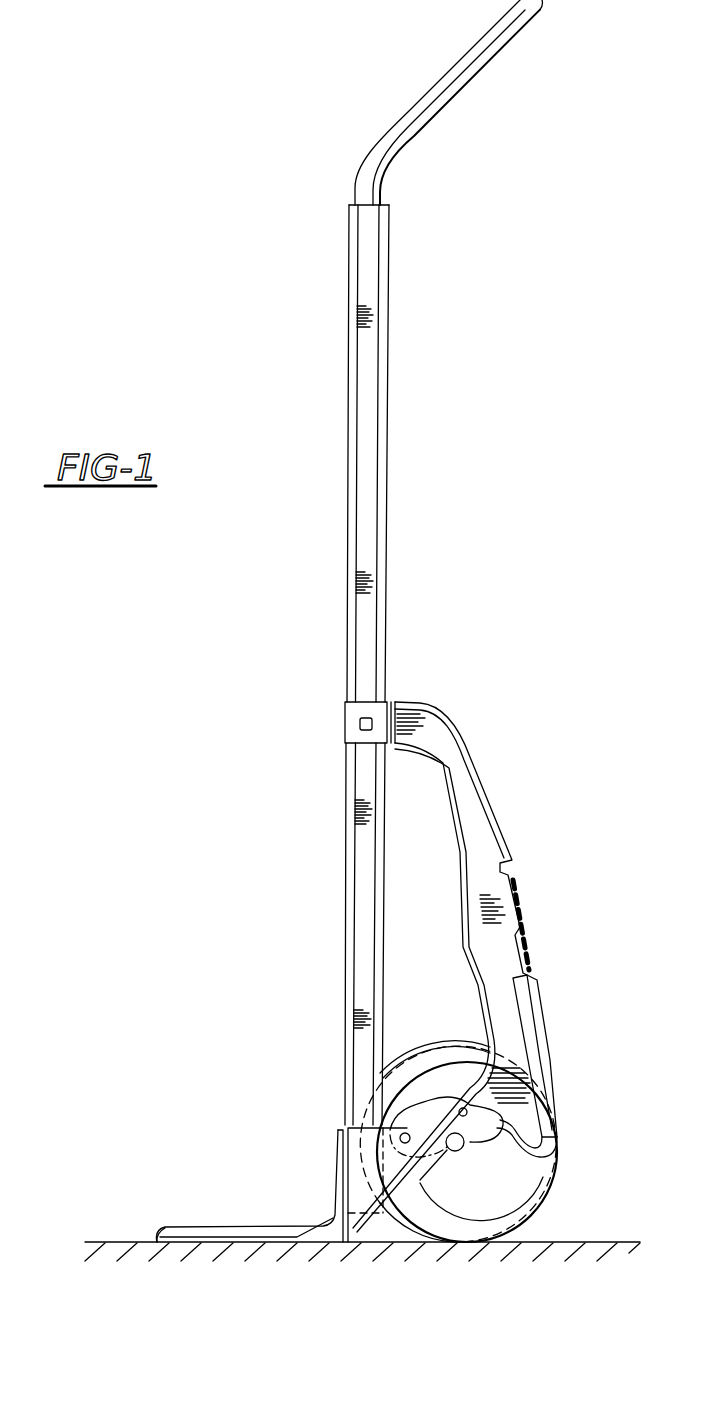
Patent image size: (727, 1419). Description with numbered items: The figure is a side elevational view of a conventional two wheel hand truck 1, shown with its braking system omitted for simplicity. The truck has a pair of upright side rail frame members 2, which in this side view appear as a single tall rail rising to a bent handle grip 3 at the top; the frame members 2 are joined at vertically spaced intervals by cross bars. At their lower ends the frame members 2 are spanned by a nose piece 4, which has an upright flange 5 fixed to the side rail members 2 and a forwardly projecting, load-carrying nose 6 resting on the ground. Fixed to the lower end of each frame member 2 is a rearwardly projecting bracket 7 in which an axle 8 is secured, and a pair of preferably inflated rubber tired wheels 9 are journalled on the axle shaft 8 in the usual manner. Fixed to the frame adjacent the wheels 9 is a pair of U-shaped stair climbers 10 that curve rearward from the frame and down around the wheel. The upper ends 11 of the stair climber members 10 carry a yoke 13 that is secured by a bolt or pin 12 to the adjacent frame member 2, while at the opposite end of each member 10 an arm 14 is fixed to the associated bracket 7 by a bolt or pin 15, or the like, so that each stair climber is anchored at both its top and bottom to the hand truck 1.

The two wheel hand truck 1 is at (326, 569).
The upright side rail frame member 2 is at (377, 408).
The handle 3 is at (480, 65).
The nose piece 4 is at (280, 1190).
The upright flange 5 is at (335, 1153).
The load-carrying nose 6 is at (200, 1227).
The bracket 7 is at (540, 1197).
The axle 8 is at (461, 1146).
The wheel 9 is at (458, 1048).
The stair climber 10 is at (516, 741).
The upper end of stair climber member 11 is at (407, 692).
The bolt or pin 12 is at (362, 730).
The yoke 13 is at (348, 718).
The arm 14 is at (450, 1093).
The bolt or pin 15 is at (400, 1132).